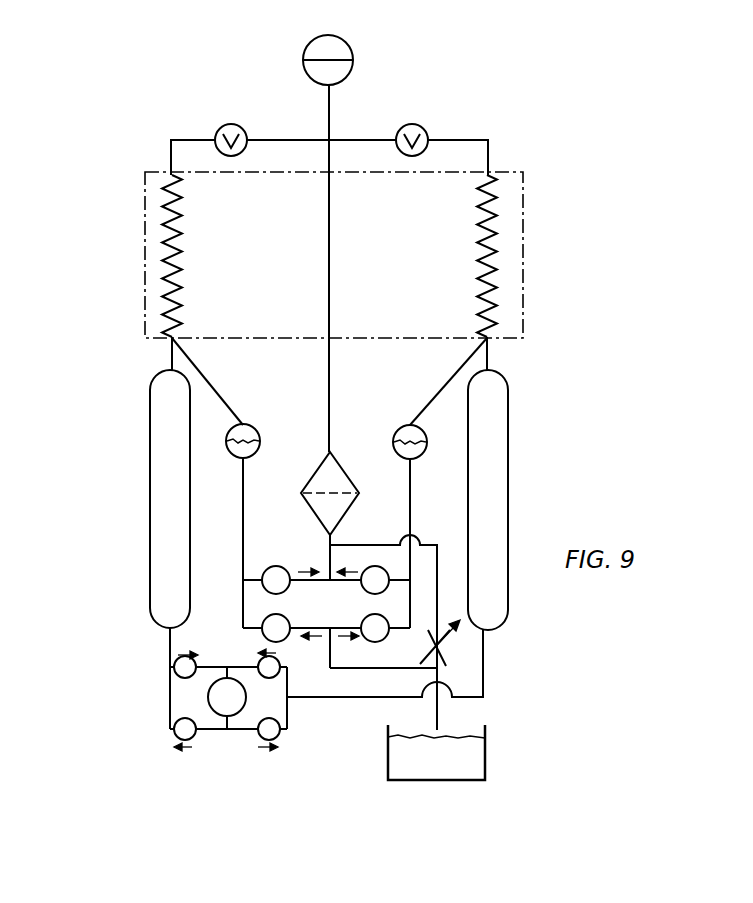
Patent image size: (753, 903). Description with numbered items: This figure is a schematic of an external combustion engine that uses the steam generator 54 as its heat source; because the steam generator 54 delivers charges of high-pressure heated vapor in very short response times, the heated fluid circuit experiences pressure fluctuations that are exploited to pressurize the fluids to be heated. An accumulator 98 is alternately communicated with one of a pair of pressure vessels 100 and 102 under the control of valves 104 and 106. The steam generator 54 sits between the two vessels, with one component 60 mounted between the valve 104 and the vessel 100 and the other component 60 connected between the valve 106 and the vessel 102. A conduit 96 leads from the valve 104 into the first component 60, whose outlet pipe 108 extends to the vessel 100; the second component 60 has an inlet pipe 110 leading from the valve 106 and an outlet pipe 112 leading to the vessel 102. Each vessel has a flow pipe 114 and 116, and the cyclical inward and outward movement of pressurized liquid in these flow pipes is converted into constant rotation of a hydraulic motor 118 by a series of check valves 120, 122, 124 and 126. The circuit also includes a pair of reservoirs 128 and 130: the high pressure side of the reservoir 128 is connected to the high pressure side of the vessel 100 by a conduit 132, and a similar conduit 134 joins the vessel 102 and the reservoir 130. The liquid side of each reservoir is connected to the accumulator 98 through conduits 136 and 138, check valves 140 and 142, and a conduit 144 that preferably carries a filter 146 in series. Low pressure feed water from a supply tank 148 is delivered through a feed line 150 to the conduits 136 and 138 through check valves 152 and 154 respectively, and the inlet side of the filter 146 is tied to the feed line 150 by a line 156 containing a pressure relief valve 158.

The steam generator 54 is at (530, 214).
The component 60 is at (163, 240).
The conduit 96 is at (192, 139).
The accumulator 98 is at (347, 44).
The pressure vessel 100 is at (165, 460).
The pressure vessel 102 is at (482, 442).
The valve 104 is at (234, 124).
The valve 106 is at (414, 124).
The outlet pipe 108 is at (172, 365).
The inlet pipe 110 is at (468, 140).
The outlet pipe 112 is at (487, 366).
The flow pipe 114 is at (170, 660).
The flow pipe 116 is at (490, 667).
The hydraulic motor 118 is at (205, 695).
The check valve 120 is at (225, 645).
The check valve 122 is at (195, 740).
The check valve 124 is at (306, 760).
The check valve 126 is at (283, 666).
The reservoir 128 is at (252, 425).
The reservoir 130 is at (402, 426).
The conduit 132 is at (205, 367).
The conduit 134 is at (466, 368).
The conduit 136 is at (243, 528).
The conduit 138 is at (410, 526).
The check valve 140 is at (283, 566).
The check valve 142 is at (386, 566).
The conduit 144 is at (330, 256).
The filter 146 is at (308, 478).
The supply tank 148 is at (488, 748).
The feed line 150 is at (355, 680).
The check valve 152 is at (295, 606).
The check valve 154 is at (396, 608).
The line 156 is at (440, 558).
The pressure relief valve 158 is at (470, 641).